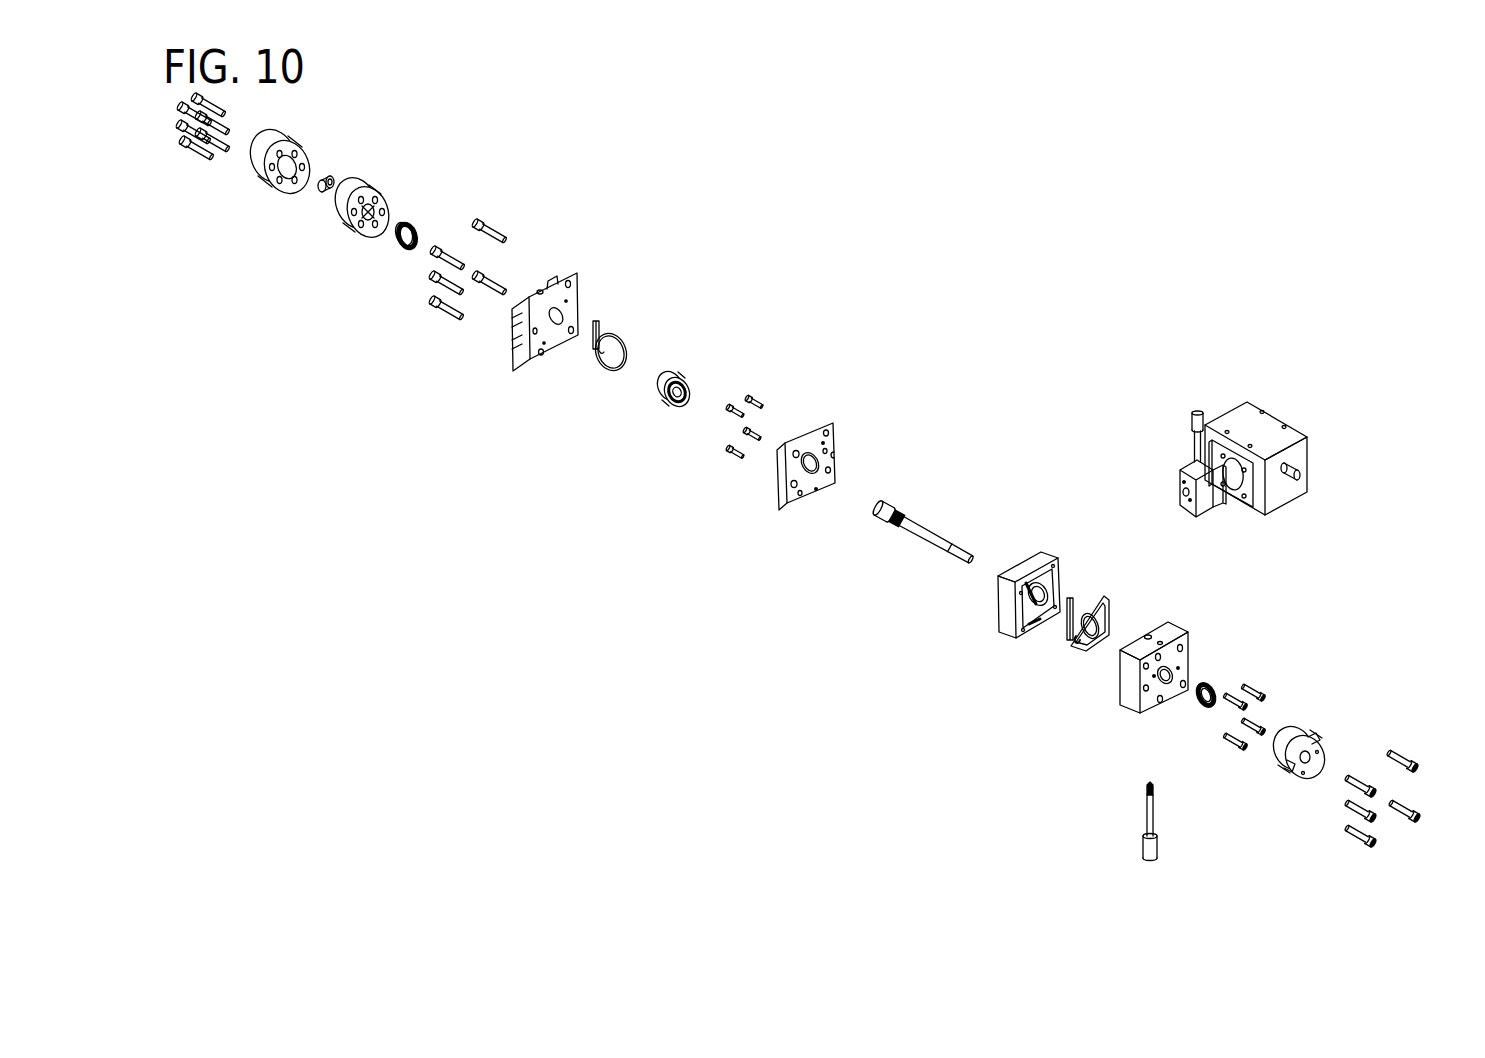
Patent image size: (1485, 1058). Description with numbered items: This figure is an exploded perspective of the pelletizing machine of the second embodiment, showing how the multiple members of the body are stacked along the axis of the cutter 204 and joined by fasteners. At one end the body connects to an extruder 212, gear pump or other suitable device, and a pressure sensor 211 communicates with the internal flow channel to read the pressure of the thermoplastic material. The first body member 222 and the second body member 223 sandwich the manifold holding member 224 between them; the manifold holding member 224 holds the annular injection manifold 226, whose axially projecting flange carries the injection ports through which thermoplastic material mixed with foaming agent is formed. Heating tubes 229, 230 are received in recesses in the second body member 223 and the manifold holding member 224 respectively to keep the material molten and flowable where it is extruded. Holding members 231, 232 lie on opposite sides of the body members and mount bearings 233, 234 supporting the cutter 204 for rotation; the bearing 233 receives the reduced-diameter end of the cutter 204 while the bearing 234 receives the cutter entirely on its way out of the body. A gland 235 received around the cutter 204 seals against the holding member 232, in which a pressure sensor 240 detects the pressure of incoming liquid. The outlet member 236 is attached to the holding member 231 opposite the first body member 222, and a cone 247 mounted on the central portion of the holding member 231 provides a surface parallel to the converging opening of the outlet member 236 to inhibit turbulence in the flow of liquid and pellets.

The cutter 204 is at (942, 531).
The pressure sensor 211 is at (1190, 428).
The extruder 212 is at (1274, 423).
The first body member 222 is at (548, 272).
The second body member 223 is at (1008, 630).
The manifold holding member 224 is at (816, 428).
The injection manifold 226 is at (675, 377).
The heating tube 229 is at (1080, 650).
The heating tube 230 is at (600, 370).
The holding member 231 is at (350, 237).
The holding member 232 is at (1163, 626).
The bearing 233 is at (398, 247).
The bearing 234 is at (1202, 684).
The gland 235 is at (1278, 773).
The outlet member 236 is at (276, 136).
The pressure sensor 240 is at (1143, 840).
The cone 247 is at (326, 182).